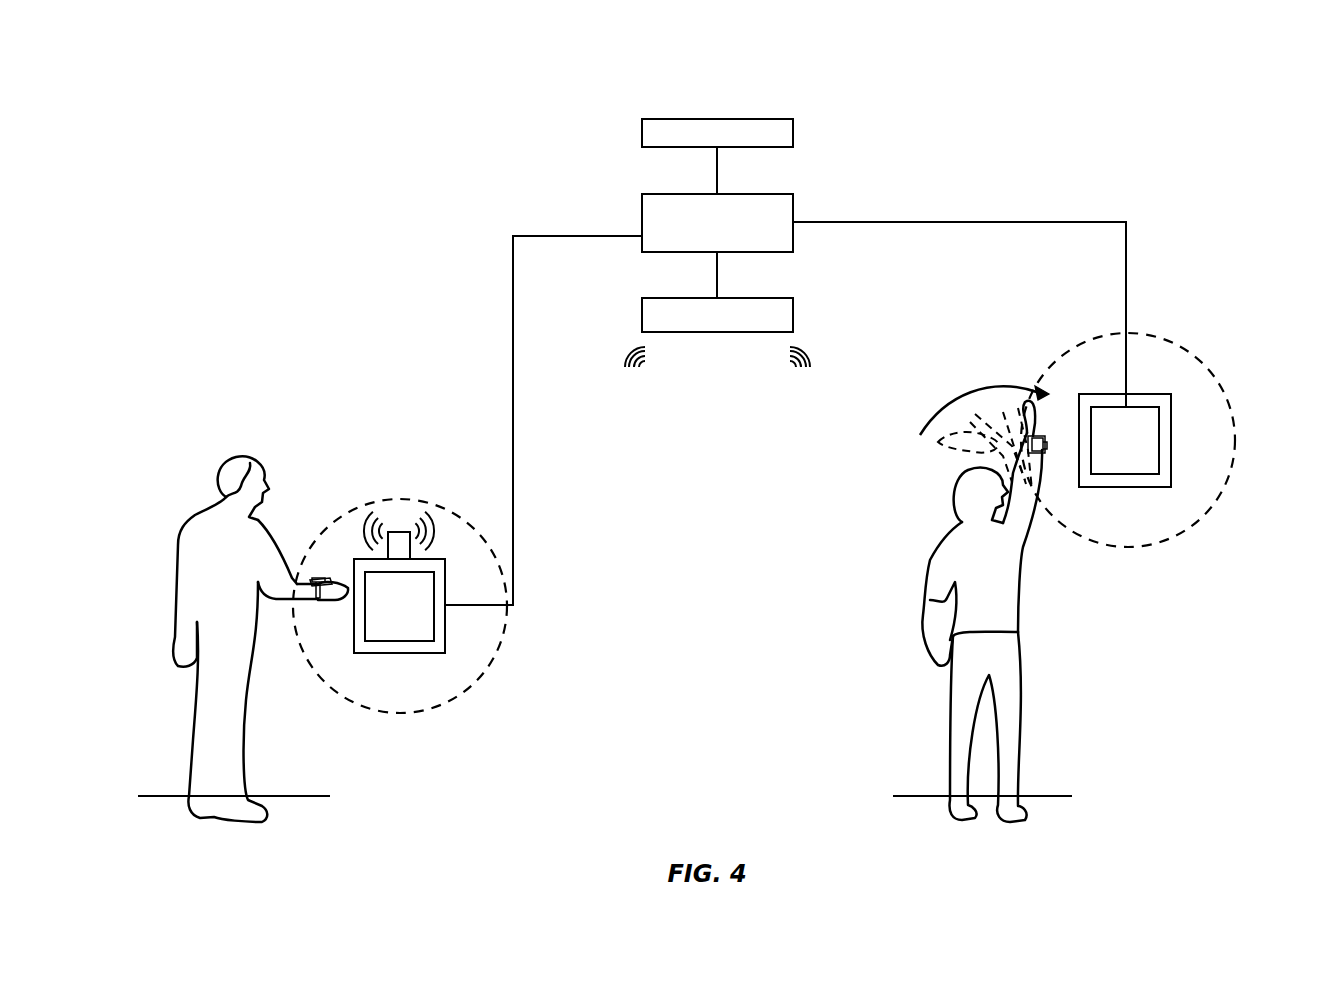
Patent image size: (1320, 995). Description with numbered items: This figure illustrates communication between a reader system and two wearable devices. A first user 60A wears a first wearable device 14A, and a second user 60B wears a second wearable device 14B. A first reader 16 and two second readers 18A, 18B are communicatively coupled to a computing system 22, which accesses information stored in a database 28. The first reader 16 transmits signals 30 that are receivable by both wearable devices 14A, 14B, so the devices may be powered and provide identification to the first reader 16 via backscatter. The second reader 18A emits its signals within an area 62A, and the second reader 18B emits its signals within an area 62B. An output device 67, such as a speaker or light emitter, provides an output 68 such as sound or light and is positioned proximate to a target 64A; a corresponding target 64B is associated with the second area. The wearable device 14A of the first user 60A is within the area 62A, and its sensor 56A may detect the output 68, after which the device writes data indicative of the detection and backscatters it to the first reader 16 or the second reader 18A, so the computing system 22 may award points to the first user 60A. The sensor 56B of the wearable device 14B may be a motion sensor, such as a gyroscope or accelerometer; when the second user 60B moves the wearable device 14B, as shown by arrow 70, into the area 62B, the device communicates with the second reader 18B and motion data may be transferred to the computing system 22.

The first wearable device 14A is at (320, 600).
The second wearable device 14B is at (1046, 434).
The first reader 16 is at (795, 322).
The second reader 18A is at (434, 623).
The second reader 18B is at (1160, 438).
The computing system 22 is at (756, 196).
The database 28 is at (720, 120).
The signals 30 is at (619, 361).
The sensor 56A is at (306, 580).
The sensor 56B is at (1046, 453).
The first user 60A is at (230, 460).
The second user 60B is at (952, 482).
The area 62A is at (392, 712).
The area 62B is at (1128, 548).
The target 64A is at (400, 653).
The target 64B is at (1173, 460).
The output device 67 is at (398, 532).
The output 68 is at (442, 532).
The arrow 70 is at (965, 400).